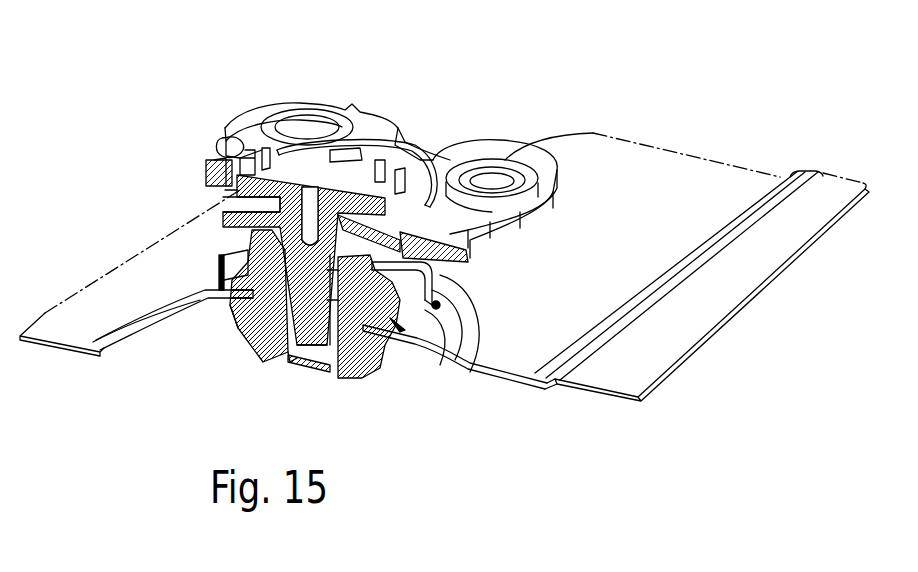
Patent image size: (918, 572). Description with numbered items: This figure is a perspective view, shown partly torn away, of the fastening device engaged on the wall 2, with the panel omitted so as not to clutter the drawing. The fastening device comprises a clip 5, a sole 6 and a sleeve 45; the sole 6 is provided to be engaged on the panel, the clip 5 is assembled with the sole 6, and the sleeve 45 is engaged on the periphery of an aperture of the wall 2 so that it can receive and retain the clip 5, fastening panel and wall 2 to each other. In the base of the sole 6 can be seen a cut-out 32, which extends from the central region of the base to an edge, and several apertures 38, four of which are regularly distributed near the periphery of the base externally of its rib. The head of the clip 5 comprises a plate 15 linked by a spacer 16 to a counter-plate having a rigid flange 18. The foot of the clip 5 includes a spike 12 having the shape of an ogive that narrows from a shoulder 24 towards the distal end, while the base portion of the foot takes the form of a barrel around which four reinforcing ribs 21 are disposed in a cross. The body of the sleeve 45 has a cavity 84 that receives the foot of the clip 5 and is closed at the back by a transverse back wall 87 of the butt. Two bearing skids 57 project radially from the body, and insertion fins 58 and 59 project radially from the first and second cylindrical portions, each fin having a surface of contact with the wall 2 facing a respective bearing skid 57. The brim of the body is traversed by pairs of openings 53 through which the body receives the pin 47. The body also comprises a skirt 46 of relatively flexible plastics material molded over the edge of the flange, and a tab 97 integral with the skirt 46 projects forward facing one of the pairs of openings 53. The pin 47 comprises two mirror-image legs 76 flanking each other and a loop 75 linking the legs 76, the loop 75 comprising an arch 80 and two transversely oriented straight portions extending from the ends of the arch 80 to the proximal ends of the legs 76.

The wall 2 is at (693, 132).
The clip 5 is at (203, 194).
The sole 6 is at (214, 116).
The spike 12 is at (340, 350).
The plate 15 is at (230, 217).
The spacer 16 is at (311, 195).
The rigid flange 18 is at (300, 138).
The reinforcing ribs 21 is at (240, 240).
The shoulder 24 is at (313, 337).
The cut-out 32 is at (340, 200).
The apertures 38 is at (498, 188).
The sleeve 45 is at (405, 460).
The skirt 46 is at (170, 302).
The pin 47 is at (463, 344).
The openings 53 is at (392, 262).
The bearing skids 57 is at (250, 302).
The insertion fin 58 is at (417, 441).
The insertion fin 59 is at (243, 328).
The loop 75 is at (428, 190).
The legs 76 is at (233, 263).
The arch 80 is at (440, 305).
The cavity 84 is at (277, 362).
The transverse back wall 87 is at (290, 368).
The tab 97 is at (245, 290).